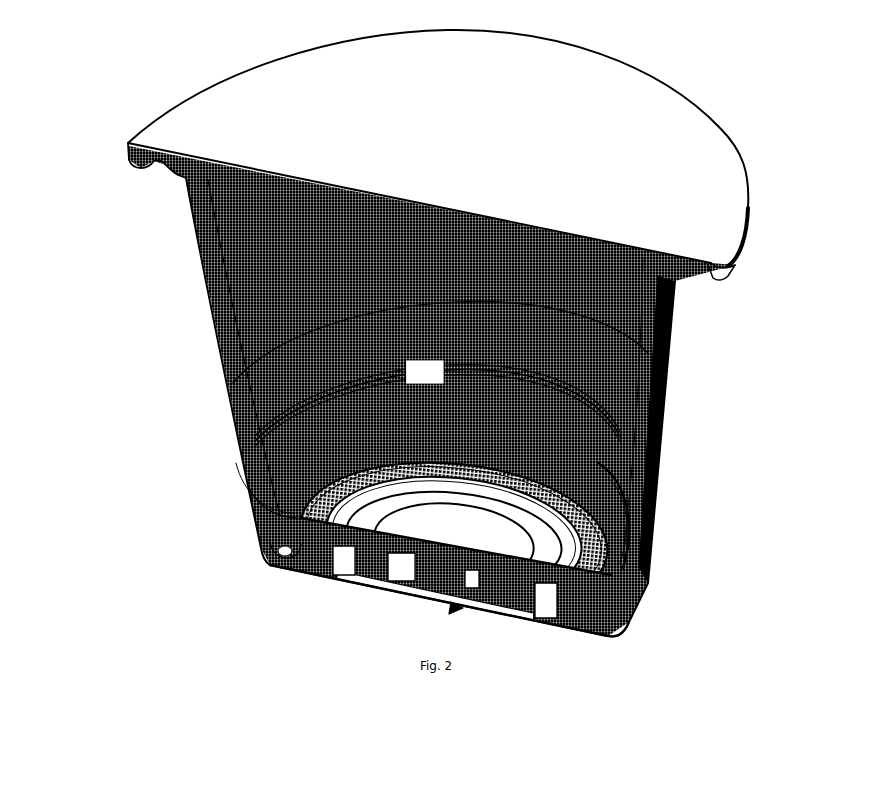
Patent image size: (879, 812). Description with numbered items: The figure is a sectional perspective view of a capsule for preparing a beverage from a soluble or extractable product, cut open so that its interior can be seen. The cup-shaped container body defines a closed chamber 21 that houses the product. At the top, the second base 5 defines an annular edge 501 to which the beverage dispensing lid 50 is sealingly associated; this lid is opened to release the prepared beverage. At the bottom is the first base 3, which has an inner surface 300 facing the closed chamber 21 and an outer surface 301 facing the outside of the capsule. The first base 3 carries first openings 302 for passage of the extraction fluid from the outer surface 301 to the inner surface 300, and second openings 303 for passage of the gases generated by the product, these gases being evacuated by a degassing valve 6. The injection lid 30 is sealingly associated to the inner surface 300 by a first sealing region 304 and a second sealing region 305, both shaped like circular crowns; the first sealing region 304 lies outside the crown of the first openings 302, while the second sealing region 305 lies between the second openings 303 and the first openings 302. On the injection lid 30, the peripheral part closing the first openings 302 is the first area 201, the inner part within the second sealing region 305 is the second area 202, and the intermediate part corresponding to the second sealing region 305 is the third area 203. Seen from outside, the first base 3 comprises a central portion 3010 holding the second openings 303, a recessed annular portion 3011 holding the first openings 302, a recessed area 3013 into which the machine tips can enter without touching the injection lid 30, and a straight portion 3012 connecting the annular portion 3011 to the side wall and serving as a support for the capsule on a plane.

The beverage dispensing lid 50 is at (248, 55).
The annular edge 501 is at (733, 253).
The second base 5 is at (141, 172).
The first base 3 is at (246, 554).
The injection lid 30 is at (650, 425).
The second openings 303 is at (660, 323).
The second sealing region 305 is at (297, 401).
The closed chamber 21 is at (425, 372).
The first area 201 is at (385, 480).
The second area 202 is at (460, 508).
The third area 203 is at (443, 490).
The first openings 302 is at (648, 453).
The first sealing region 304 is at (240, 478).
The annular portion 3011 is at (250, 528).
The central portion 3010 is at (347, 562).
The portion 3012 is at (255, 556).
The recessed area 3013 is at (363, 575).
The inner surface 300 is at (603, 627).
The outer surface 301 is at (607, 637).
The degassing valve 6 is at (443, 600).